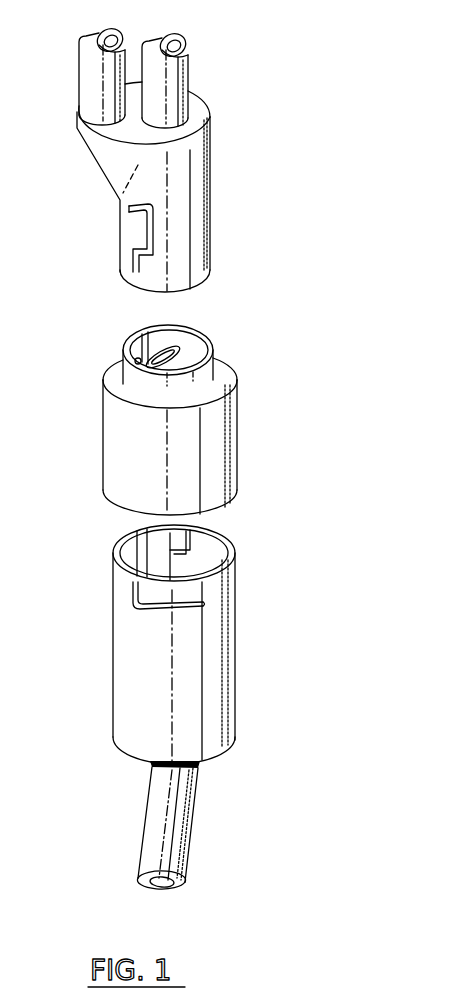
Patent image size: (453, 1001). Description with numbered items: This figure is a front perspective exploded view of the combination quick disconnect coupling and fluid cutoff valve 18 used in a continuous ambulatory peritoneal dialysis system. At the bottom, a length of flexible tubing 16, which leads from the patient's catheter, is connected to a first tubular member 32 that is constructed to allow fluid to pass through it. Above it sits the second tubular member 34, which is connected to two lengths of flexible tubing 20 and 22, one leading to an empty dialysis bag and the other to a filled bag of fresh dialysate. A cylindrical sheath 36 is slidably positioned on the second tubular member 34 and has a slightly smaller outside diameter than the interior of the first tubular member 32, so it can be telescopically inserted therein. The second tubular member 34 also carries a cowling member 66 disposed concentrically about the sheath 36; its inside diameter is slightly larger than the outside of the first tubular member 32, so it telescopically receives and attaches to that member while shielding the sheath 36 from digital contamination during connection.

The flexible tubing 16 is at (195, 847).
The quick disconnect coupling and fluid cutoff valve 18 is at (78, 411).
The flexible tubing 20 is at (79, 75).
The flexible tubing 22 is at (190, 77).
The first tubular member 32 is at (236, 628).
The second tubular member 34 is at (211, 192).
The cylindrical sheath 36 is at (211, 360).
The cowling member 66 is at (238, 400).